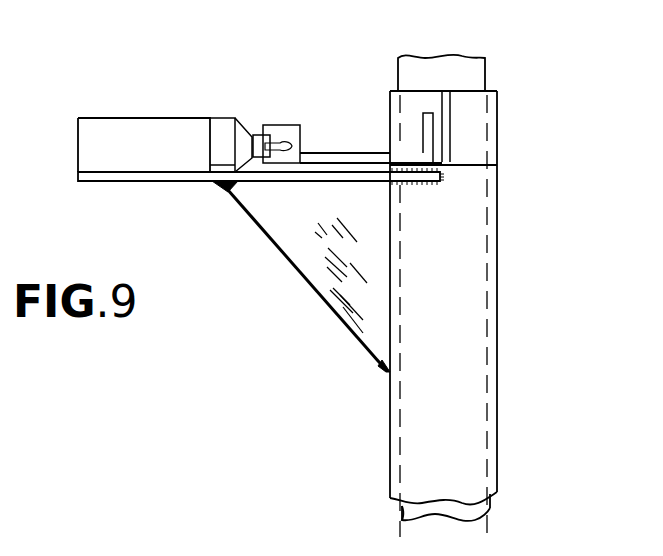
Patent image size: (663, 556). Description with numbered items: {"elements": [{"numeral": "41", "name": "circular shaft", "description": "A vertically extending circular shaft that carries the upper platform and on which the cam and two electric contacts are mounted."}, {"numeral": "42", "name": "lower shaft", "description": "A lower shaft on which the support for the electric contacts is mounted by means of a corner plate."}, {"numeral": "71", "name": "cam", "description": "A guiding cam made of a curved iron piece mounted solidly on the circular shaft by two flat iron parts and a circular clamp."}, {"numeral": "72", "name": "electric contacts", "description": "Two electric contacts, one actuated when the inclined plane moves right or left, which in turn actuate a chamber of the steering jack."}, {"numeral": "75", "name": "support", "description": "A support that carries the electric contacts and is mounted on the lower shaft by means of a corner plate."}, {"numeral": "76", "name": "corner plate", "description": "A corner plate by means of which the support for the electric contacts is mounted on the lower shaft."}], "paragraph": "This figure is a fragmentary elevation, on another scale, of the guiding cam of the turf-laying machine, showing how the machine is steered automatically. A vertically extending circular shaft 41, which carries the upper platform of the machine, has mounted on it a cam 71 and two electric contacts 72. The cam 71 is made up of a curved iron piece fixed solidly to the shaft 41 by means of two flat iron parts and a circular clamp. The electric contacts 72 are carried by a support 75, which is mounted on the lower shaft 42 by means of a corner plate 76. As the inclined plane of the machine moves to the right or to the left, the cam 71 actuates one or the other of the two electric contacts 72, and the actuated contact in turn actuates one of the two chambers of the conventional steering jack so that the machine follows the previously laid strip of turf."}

The upper column section 41 is at (477, 73).
The lower column section 42 is at (428, 418).
The mounting block 71 is at (280, 130).
The cylinder housing 72 is at (245, 122).
The support plate 75 is at (170, 183).
The diagonal brace 76 is at (322, 265).